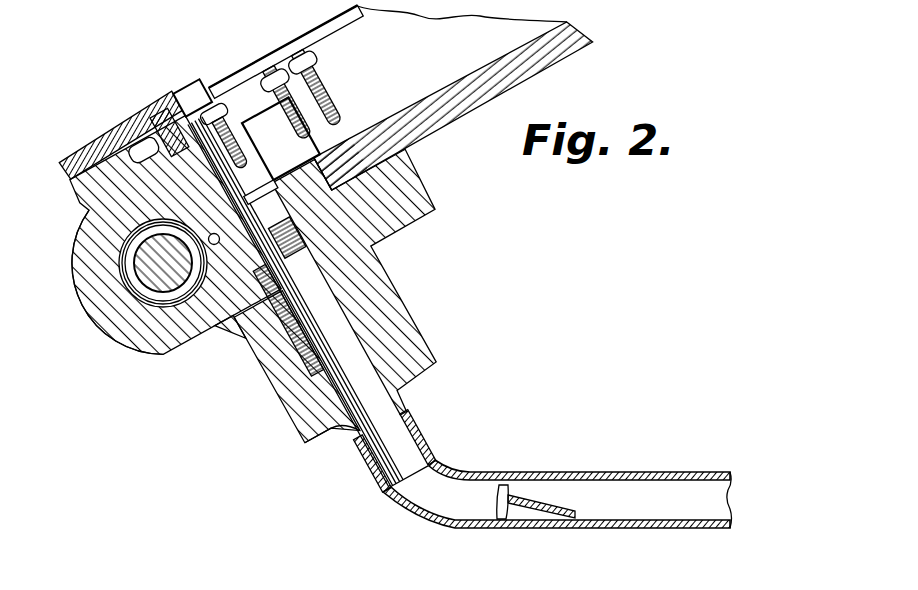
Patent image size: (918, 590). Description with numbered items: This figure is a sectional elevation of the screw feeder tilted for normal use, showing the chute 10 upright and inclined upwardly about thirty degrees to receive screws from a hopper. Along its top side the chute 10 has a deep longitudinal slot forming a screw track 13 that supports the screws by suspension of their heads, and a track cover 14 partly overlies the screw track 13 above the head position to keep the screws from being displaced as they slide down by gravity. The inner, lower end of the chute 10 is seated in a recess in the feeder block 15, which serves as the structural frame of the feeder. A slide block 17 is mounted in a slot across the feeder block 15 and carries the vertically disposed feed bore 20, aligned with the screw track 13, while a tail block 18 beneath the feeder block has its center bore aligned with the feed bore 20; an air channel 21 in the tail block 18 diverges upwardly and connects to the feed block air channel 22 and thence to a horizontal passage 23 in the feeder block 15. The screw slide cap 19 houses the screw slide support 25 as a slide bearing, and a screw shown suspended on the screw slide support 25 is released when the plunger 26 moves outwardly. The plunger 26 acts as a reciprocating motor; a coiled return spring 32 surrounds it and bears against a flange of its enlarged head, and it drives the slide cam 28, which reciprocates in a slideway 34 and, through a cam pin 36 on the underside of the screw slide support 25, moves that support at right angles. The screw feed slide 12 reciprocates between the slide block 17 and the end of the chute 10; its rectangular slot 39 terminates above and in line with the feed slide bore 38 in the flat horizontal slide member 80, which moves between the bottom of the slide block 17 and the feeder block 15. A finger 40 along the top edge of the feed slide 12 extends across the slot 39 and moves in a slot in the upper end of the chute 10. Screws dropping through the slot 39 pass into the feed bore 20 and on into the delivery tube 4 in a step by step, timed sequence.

The delivery tube 4 is at (568, 472).
The chute 10 is at (575, 46).
The screw feed slide 12 is at (308, 165).
The screw track 13 is at (360, 22).
The track cover 14 is at (307, 32).
The feeder block 15 is at (422, 193).
The slide block 17 is at (253, 243).
The tail block 18 is at (303, 425).
The screw slide cap 19 is at (90, 143).
The feed bore 20 is at (262, 187).
The air channel 21 is at (330, 378).
The feed block air channel 22 is at (240, 325).
The horizontal passage 23 is at (213, 245).
The screw slide support 25 is at (74, 180).
The plunger 26 is at (133, 273).
The slide cam 28 is at (90, 214).
The coiled return spring 32 is at (157, 296).
The slideway 34 is at (96, 206).
The cam pin 36 is at (129, 127).
The feed slide bore 38 is at (284, 238).
The slot 39 is at (257, 154).
The finger 40 is at (245, 82).
The flat horizontal slide member 80 is at (262, 245).